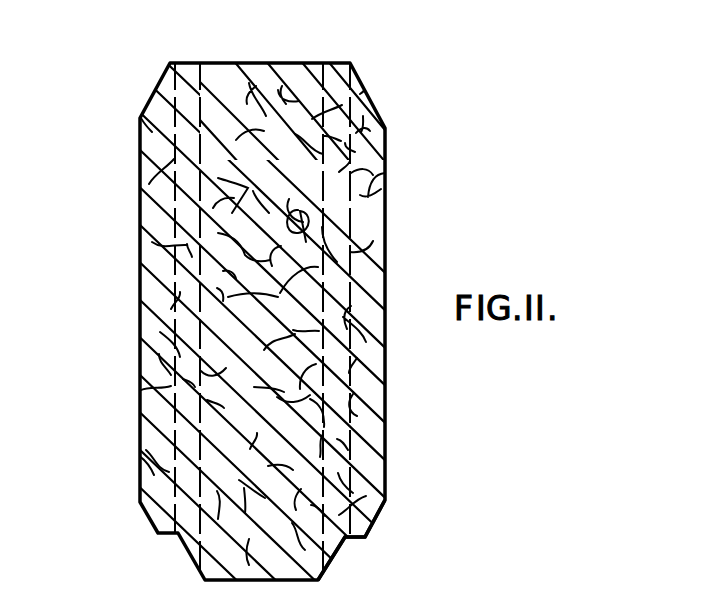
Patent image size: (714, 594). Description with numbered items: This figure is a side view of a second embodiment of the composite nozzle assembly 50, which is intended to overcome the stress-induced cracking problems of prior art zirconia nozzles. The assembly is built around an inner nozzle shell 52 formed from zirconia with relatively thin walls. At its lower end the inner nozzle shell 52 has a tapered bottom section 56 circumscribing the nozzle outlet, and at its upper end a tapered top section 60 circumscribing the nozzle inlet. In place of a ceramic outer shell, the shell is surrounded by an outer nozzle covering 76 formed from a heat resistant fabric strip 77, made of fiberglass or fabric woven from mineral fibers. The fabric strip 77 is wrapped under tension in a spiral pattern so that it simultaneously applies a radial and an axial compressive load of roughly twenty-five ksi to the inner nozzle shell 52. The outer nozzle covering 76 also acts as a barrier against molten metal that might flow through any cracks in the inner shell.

The composite nozzle assembly 50 is at (128, 107).
The inner nozzle shell 52 is at (297, 76).
The tapered bottom section 56 is at (390, 484).
The tapered top section 60 is at (338, 108).
The outer nozzle covering 76 is at (130, 184).
The heat resistant fabric strip 77 is at (157, 284).